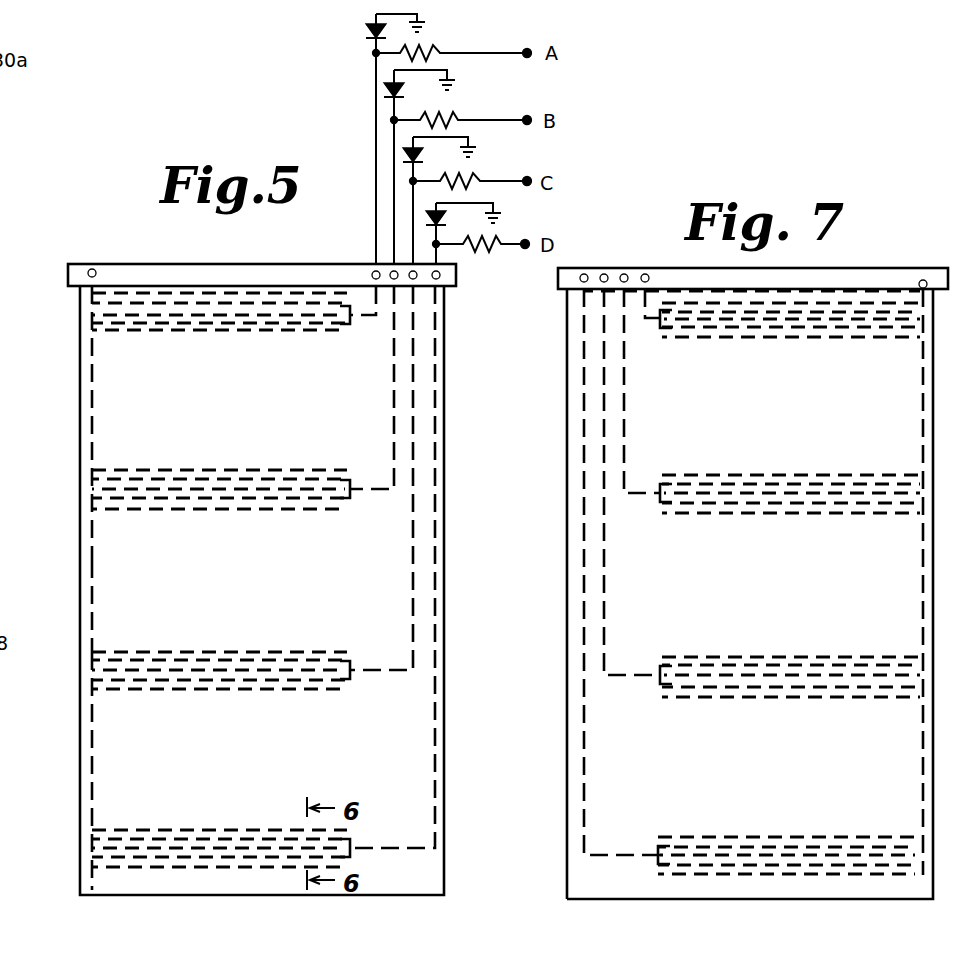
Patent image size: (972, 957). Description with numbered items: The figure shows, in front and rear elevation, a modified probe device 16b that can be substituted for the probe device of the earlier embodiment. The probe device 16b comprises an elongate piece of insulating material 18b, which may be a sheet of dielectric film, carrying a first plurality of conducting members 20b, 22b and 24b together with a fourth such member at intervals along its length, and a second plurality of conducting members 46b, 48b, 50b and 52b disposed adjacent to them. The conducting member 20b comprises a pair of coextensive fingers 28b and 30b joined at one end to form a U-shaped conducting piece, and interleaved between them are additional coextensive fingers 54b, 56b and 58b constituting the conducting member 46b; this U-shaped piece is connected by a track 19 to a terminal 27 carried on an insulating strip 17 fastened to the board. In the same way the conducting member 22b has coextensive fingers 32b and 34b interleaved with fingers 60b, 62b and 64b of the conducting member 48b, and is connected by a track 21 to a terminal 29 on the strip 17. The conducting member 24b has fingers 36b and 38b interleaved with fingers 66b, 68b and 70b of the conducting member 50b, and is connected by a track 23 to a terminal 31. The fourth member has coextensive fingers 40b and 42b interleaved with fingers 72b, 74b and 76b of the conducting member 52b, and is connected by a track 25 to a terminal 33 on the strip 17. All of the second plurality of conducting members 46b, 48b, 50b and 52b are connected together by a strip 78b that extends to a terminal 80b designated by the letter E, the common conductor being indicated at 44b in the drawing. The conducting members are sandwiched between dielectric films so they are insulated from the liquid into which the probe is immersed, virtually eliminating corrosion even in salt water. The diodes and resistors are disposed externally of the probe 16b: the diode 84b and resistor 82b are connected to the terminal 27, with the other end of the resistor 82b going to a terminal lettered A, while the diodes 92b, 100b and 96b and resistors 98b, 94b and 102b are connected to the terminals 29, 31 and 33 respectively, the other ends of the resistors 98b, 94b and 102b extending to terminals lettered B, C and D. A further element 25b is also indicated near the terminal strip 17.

In FIG. 5, the probe device 16b is at (446, 764).
In FIG. 7, the probe device 16b is at (558, 879).
In FIG. 5, the insulating strip 17 is at (232, 268).
In FIG. 7, the insulating strip 17 is at (951, 268).
In FIG. 5, the elongate piece of insulating material 18b is at (446, 640).
In FIG. 7, the elongate piece of insulating material 18b is at (566, 829).
In FIG. 5, the track 19 is at (374, 318).
In FIG. 7, the track 19 is at (647, 335).
In FIG. 5, the track 21 is at (392, 400).
In FIG. 5, the track 23 is at (412, 575).
In FIG. 5, the track 25 is at (434, 745).
In FIG. 7, the track 25 is at (582, 771).
In FIG. 5, the terminal 27 is at (373, 270).
In FIG. 7, the terminal 27 is at (648, 273).
In FIG. 5, the terminal 29 is at (391, 270).
In FIG. 7, the terminal 29 is at (626, 273).
In FIG. 5, the terminal 31 is at (416, 280).
In FIG. 7, the terminal 31 is at (605, 273).
In FIG. 5, the terminal 33 is at (440, 278).
In FIG. 7, the terminal 33 is at (585, 273).
In FIG. 5, the finger 30b is at (320, 275).
In FIG. 5, the common conductor 44b is at (104, 571).
In FIG. 7, the common conductor 44b is at (910, 596).
In FIG. 5, the conducting member 46b is at (182, 312).
In FIG. 7, the conducting member 46b is at (815, 322).
In FIG. 5, the conducting member 48b is at (182, 498).
In FIG. 7, the conducting member 48b is at (814, 506).
In FIG. 5, the conducting member 50b is at (182, 681).
In FIG. 7, the conducting member 50b is at (813, 679).
In FIG. 5, the conducting member 52b is at (180, 834).
In FIG. 7, the conducting member 52b is at (805, 840).
In FIG. 5, the finger 54b is at (163, 288).
In FIG. 7, the finger 54b is at (787, 301).
In FIG. 5, the finger 56b is at (157, 317).
In FIG. 7, the finger 56b is at (772, 337).
In FIG. 5, the finger 58b is at (207, 332).
In FIG. 7, the finger 58b is at (868, 340).
In FIG. 5, the conducting member 20b is at (235, 332).
In FIG. 7, the conducting member 20b is at (735, 345).
In FIG. 5, the electrode 25b is at (264, 301).
In FIG. 7, the electrode 25b is at (856, 310).
In FIG. 5, the finger 28b is at (308, 332).
In FIG. 7, the finger 28b is at (810, 339).
In FIG. 5, the finger 60b is at (135, 463).
In FIG. 7, the finger 60b is at (688, 447).
In FIG. 5, the finger 62b is at (165, 488).
In FIG. 7, the finger 62b is at (818, 492).
In FIG. 5, the finger 64b is at (160, 510).
In FIG. 7, the finger 64b is at (846, 516).
In FIG. 5, the finger 32b is at (256, 478).
In FIG. 7, the finger 32b is at (760, 483).
In FIG. 5, the finger 34b is at (240, 500).
In FIG. 7, the finger 34b is at (778, 514).
In FIG. 5, the conducting member 22b is at (274, 508).
In FIG. 7, the conducting member 22b is at (726, 514).
In FIG. 5, the finger 66b is at (130, 650).
In FIG. 7, the finger 66b is at (663, 656).
In FIG. 5, the finger 68b is at (205, 668).
In FIG. 7, the finger 68b is at (780, 674).
In FIG. 5, the finger 70b is at (186, 690).
In FIG. 7, the finger 70b is at (832, 700).
In FIG. 5, the finger 36b is at (266, 656).
In FIG. 7, the finger 36b is at (730, 664).
In FIG. 5, the finger 38b is at (284, 686).
In FIG. 7, the finger 38b is at (795, 698).
In FIG. 5, the conducting member 24b is at (232, 692).
In FIG. 7, the conducting member 24b is at (738, 698).
In FIG. 5, the finger 72b is at (107, 824).
In FIG. 7, the finger 72b is at (660, 838).
In FIG. 5, the finger 74b is at (128, 845).
In FIG. 7, the finger 74b is at (838, 855).
In FIG. 5, the finger 76b is at (140, 861).
In FIG. 7, the finger 76b is at (835, 875).
In FIG. 5, the finger 40b is at (172, 836).
In FIG. 7, the finger 40b is at (778, 847).
In FIG. 5, the finger 42b is at (165, 861).
In FIG. 7, the finger 42b is at (740, 866).
In FIG. 5, the strip 78b is at (94, 618).
In FIG. 7, the strip 78b is at (920, 608).
In FIG. 5, the terminal 80b is at (90, 268).
In FIG. 7, the terminal 80b is at (923, 279).
In FIG. 5, the resistor 82b is at (434, 50).
In FIG. 5, the diode 84b is at (366, 30).
In FIG. 5, the diode 92b is at (386, 90).
In FIG. 5, the resistor 94b is at (478, 178).
In FIG. 5, the diode 96b is at (428, 215).
In FIG. 5, the resistor 98b is at (452, 116).
In FIG. 5, the diode 100b is at (405, 155).
In FIG. 5, the resistor 102b is at (502, 240).